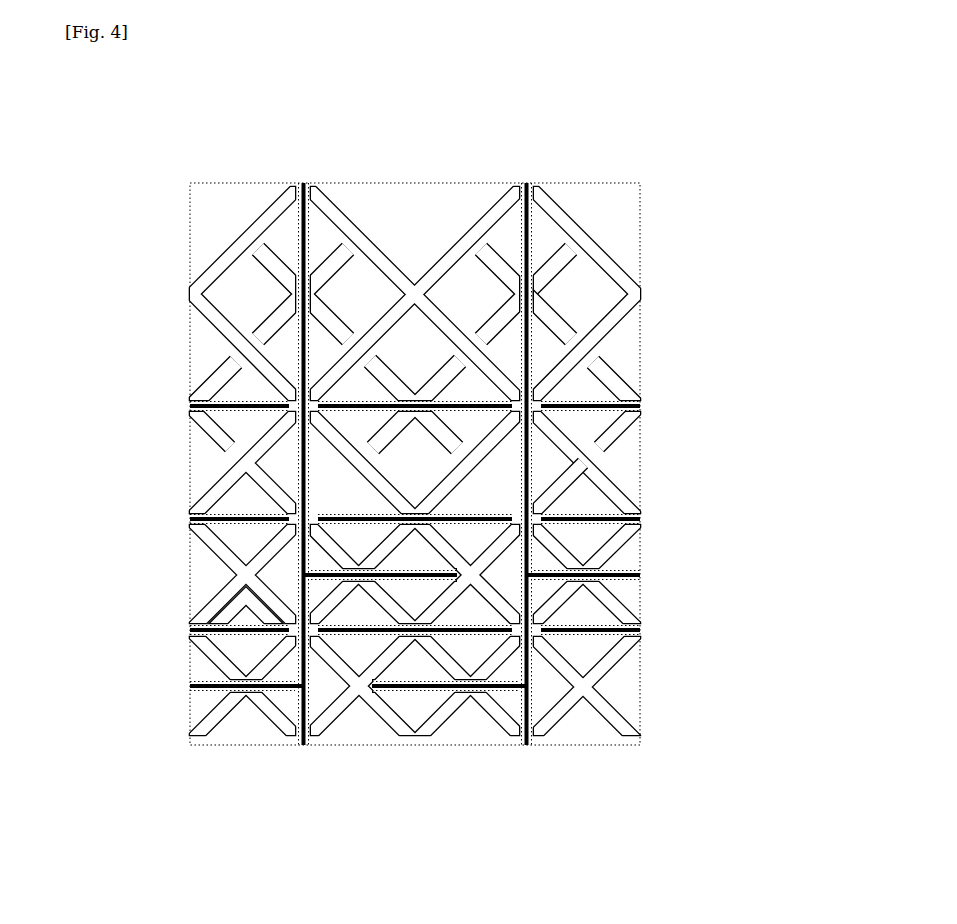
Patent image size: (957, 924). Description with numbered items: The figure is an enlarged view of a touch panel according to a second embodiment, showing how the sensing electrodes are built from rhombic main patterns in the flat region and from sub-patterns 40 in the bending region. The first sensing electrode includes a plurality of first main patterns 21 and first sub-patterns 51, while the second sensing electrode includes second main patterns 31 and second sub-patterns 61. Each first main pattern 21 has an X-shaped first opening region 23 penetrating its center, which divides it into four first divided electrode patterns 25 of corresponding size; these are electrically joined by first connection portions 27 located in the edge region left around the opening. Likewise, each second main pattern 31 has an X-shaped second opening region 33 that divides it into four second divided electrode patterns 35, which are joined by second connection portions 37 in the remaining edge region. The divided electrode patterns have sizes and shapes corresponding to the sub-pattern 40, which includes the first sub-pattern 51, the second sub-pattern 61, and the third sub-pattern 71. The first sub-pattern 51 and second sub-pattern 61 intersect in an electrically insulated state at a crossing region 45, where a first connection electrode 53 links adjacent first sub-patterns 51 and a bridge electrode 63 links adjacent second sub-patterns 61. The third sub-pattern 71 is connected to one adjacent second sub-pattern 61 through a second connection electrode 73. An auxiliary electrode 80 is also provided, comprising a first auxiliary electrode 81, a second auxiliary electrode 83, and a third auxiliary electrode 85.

The first main pattern 21 is at (417, 330).
The first opening region 23 is at (455, 372).
The first divided electrode pattern 25 is at (372, 388).
The first connection portion 27 is at (373, 447).
The second main pattern 31 is at (600, 322).
The second opening region 33 is at (563, 258).
The second divided electrode pattern 35 is at (247, 275).
The second connection portion 37 is at (540, 292).
The sub-pattern 40 is at (567, 518).
The crossing region 45 is at (292, 533).
The first sub-pattern 51 is at (600, 492).
The first connection electrode 53 is at (578, 545).
The second sub-pattern 61 is at (572, 432).
The bridge electrode 63 is at (568, 514).
The third sub-pattern 71 is at (533, 599).
The second connection electrode 73 is at (352, 583).
The auxiliary electrode 80 is at (506, 522).
The first auxiliary electrode 81 is at (583, 690).
The second auxiliary electrode 83 is at (527, 700).
The third auxiliary electrode 85 is at (430, 690).